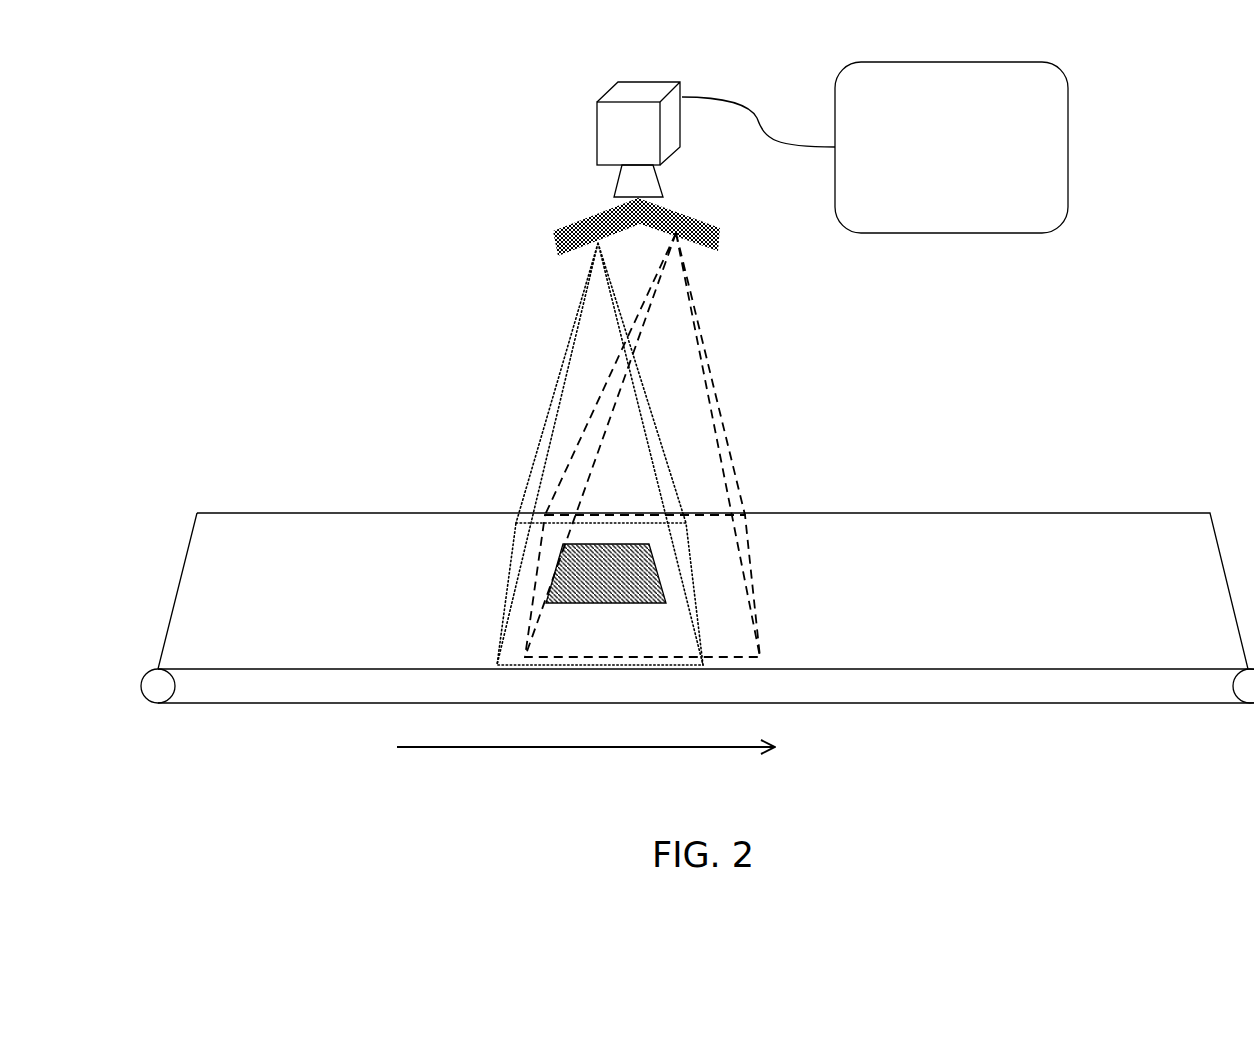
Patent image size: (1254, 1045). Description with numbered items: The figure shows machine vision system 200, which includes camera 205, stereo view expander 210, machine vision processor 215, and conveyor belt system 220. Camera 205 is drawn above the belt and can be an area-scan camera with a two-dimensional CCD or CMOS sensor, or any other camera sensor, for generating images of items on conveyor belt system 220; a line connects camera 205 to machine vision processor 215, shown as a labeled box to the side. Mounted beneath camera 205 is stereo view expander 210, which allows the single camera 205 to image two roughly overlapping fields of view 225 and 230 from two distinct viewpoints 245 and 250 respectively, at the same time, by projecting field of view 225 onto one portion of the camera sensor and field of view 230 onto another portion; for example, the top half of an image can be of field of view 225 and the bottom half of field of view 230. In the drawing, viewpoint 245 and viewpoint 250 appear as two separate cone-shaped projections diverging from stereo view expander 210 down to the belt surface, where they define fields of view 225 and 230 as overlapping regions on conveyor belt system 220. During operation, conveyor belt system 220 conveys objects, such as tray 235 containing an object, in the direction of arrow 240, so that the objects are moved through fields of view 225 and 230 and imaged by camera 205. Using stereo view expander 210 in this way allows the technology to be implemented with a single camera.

The machine vision system 200 is at (357, 107).
The camera 205 is at (597, 143).
The stereo view expander 210 is at (560, 230).
The machine vision processor 215 is at (875, 147).
The conveyor belt system 220 is at (221, 660).
The field of view 225 is at (500, 605).
The field of view 230 is at (757, 605).
The tray 235 is at (585, 605).
The arrow 240 is at (586, 763).
The viewpoint 245 is at (598, 243).
The viewpoint 250 is at (676, 233).